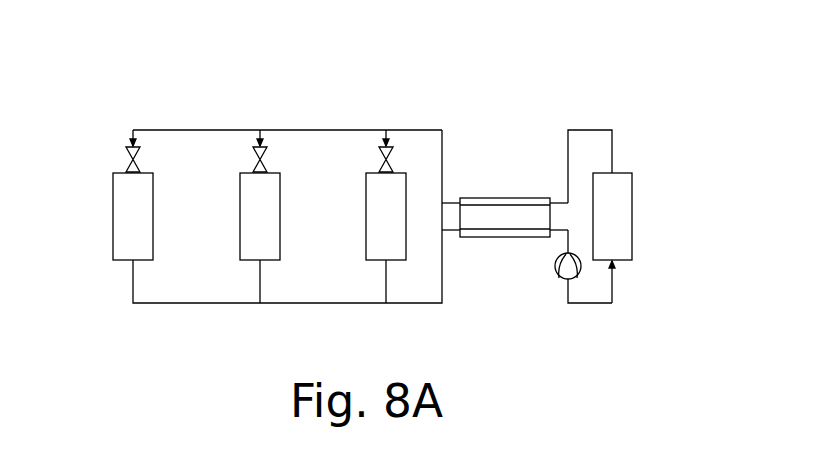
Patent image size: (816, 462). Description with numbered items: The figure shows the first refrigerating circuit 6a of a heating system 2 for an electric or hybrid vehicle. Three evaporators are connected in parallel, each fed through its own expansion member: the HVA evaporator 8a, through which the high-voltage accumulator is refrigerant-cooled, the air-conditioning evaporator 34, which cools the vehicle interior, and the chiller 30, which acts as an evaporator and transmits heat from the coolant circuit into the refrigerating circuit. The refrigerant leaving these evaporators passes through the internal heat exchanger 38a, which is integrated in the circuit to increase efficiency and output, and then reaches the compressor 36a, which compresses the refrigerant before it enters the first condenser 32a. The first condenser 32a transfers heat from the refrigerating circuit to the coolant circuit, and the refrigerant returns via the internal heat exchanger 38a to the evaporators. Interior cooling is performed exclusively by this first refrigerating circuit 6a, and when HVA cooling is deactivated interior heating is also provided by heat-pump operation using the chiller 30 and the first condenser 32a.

The heating system 2 is at (66, 104).
The first refrigerating circuit 6a is at (94, 152).
The HVA evaporator 8a is at (133, 216).
The air-conditioning evaporator 34 is at (240, 204).
The chiller 30 is at (386, 216).
The internal heat exchanger 38a is at (489, 197).
The compressor 36a is at (553, 271).
The first condenser 32a is at (633, 222).